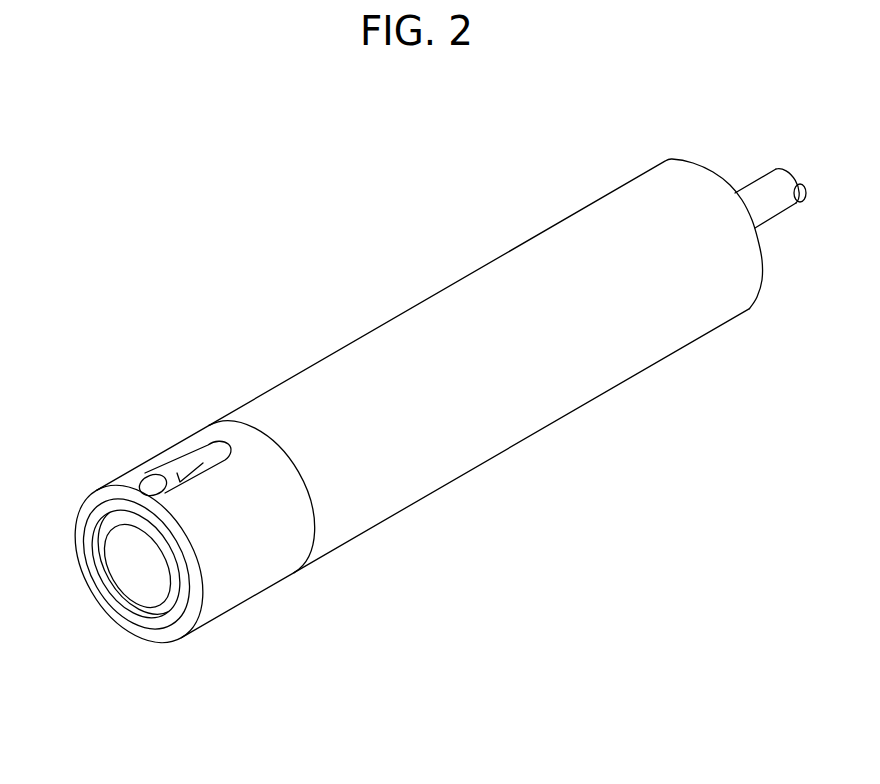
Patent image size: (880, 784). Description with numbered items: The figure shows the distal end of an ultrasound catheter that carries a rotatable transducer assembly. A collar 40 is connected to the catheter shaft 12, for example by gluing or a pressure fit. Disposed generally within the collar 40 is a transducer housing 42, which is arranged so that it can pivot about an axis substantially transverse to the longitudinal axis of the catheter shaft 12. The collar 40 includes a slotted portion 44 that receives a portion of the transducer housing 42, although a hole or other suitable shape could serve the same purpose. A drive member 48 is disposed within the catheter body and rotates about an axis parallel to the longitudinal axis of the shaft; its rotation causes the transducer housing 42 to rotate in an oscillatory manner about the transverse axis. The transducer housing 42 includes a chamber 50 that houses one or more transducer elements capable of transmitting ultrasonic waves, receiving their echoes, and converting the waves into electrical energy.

The catheter shaft 12 is at (365, 332).
The collar 40 is at (258, 592).
The transducer housing 42 is at (118, 585).
The slotted portion 44 is at (202, 449).
The drive member 48 is at (761, 183).
The chamber 50 is at (116, 550).